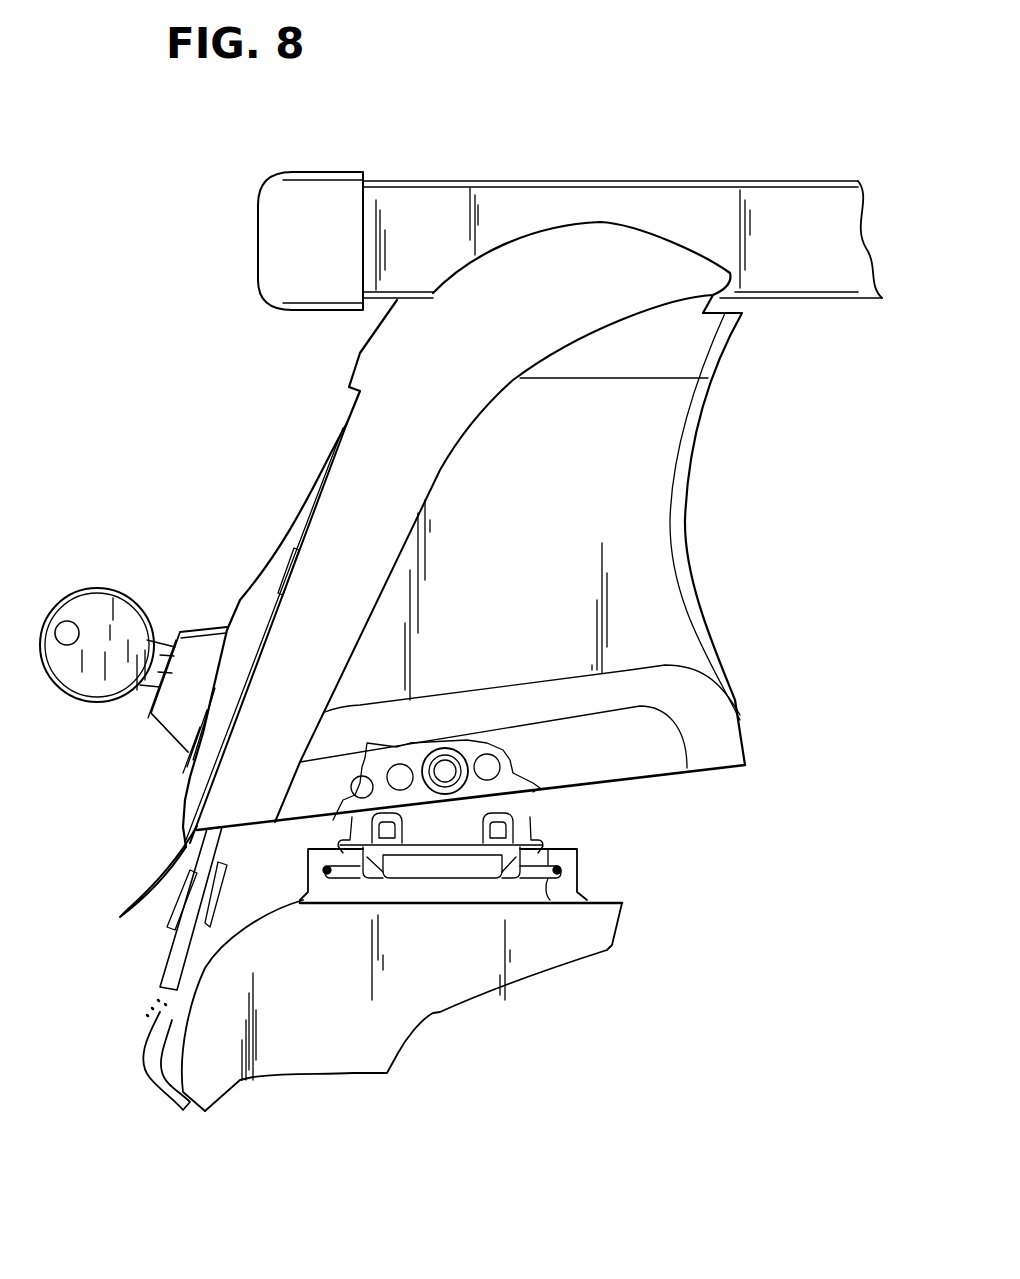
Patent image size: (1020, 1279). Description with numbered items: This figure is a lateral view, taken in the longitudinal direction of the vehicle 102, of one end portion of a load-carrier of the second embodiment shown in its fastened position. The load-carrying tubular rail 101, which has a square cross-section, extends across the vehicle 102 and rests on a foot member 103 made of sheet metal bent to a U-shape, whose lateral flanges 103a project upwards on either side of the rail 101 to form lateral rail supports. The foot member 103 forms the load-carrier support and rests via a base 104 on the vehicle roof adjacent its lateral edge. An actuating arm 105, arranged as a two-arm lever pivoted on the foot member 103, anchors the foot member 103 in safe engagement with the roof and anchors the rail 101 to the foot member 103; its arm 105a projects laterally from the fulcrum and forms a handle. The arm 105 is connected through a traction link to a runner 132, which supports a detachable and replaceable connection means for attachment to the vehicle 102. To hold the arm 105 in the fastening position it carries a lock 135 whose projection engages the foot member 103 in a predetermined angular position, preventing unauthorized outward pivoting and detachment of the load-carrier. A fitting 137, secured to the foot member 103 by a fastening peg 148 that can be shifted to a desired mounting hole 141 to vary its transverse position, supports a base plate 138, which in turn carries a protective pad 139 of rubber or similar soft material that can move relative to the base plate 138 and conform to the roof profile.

The load-carrying tubular rail 101 is at (738, 192).
The vehicle 102 is at (612, 945).
The foot member 103 is at (387, 348).
The lateral flange 103a is at (596, 240).
The base 104 is at (465, 898).
The actuating arm 105 is at (276, 552).
The handle arm 105a is at (192, 801).
The runner 132 is at (217, 843).
The lock 135 is at (203, 640).
The fitting 137 is at (470, 776).
The base plate 138 is at (543, 880).
The protective pad 139 is at (452, 889).
The mounting hole 141 is at (396, 773).
The fastening peg 148 is at (447, 768).